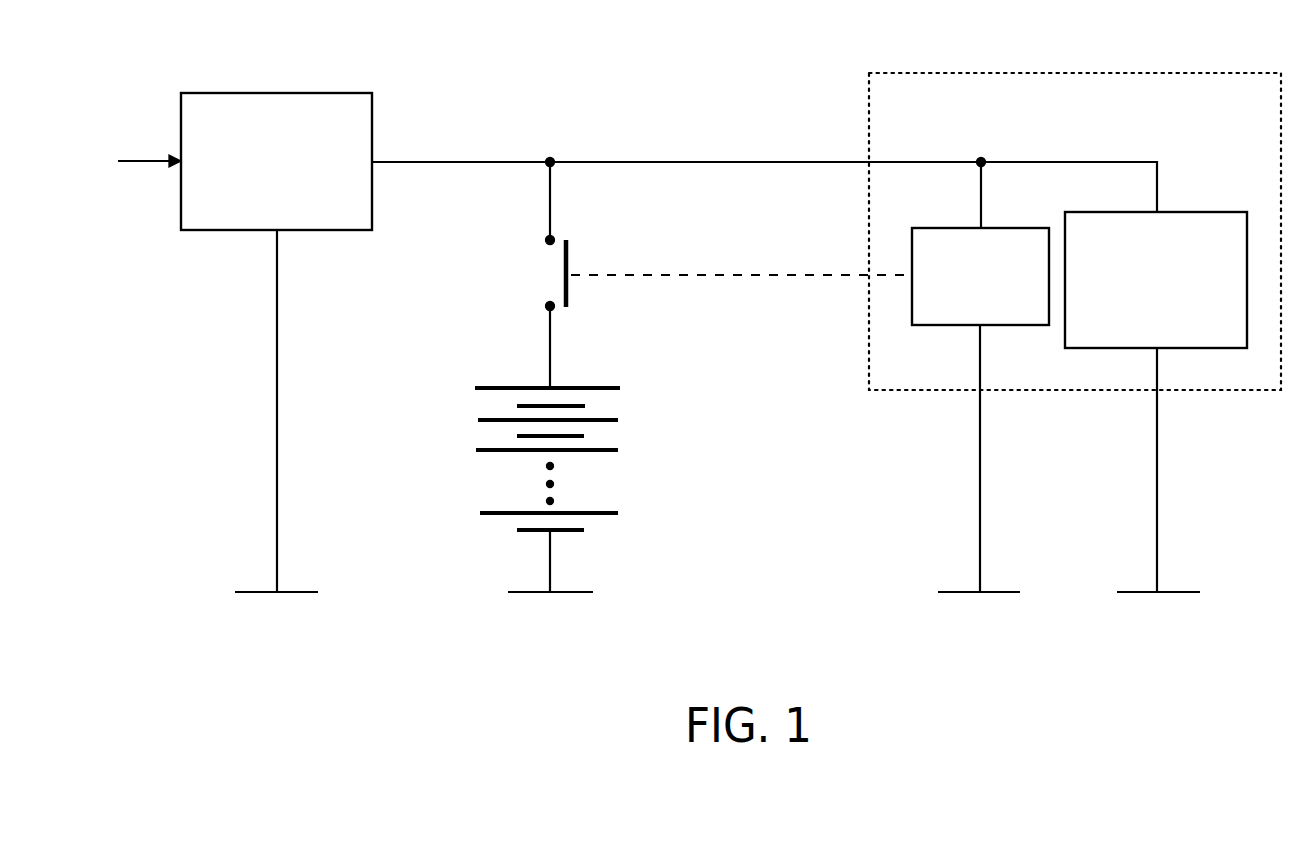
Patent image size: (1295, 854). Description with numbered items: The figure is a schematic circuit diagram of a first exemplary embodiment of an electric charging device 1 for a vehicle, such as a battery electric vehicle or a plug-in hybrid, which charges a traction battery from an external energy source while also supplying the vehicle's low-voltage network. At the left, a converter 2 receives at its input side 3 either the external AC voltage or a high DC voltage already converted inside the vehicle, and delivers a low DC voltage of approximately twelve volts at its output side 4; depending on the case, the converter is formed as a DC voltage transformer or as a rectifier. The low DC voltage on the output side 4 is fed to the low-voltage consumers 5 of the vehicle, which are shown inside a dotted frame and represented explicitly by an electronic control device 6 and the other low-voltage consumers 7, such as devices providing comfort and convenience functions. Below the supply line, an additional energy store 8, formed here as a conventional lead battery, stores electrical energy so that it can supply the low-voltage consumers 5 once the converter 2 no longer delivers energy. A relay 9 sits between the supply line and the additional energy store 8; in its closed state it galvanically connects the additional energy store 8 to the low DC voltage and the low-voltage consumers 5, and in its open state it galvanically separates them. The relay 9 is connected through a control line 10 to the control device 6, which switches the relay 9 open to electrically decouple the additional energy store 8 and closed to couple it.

The electric charging device 1 is at (201, 665).
The converter 2 is at (288, 176).
The input side 3 is at (149, 137).
The output side 4 is at (764, 167).
The low-voltage consumers 5 is at (1090, 119).
The electronic control device 6 is at (993, 296).
The other low-voltage consumers 7 is at (1170, 296).
The additional energy store 8 is at (605, 468).
The relay 9 is at (545, 274).
The control line 10 is at (693, 278).